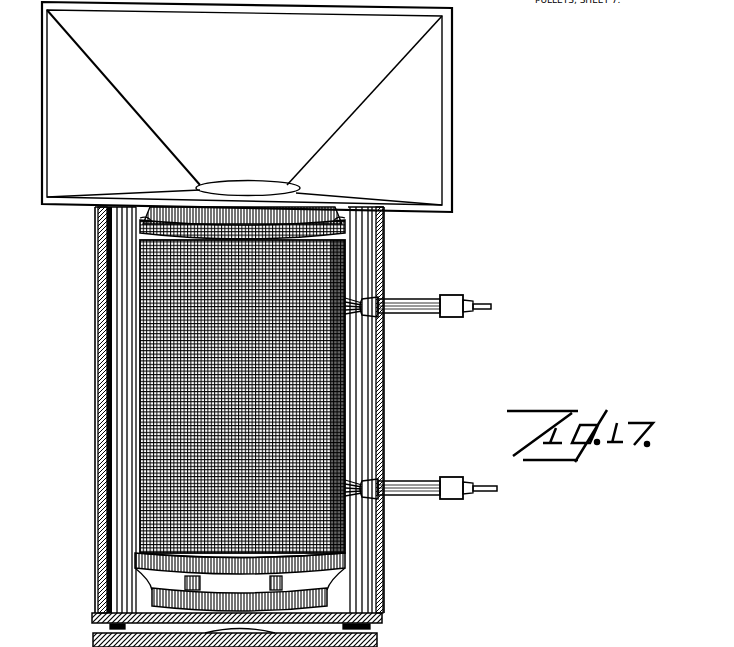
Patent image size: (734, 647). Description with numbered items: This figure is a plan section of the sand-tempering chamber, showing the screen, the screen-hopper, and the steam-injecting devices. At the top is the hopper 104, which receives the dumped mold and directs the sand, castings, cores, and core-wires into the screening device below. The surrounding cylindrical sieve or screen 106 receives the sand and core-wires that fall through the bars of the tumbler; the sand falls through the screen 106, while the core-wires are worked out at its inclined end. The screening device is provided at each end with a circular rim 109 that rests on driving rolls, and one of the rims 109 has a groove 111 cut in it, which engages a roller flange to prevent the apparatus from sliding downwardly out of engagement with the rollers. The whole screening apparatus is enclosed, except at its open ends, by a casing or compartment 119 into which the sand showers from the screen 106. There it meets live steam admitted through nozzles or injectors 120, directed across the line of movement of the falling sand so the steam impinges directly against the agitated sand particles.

The hopper 104 is at (442, 137).
The cylindrical sieve or screen 106 is at (343, 427).
The circular rim 109 is at (162, 207).
The groove 111 is at (348, 230).
The casing or compartment 119 is at (99, 382).
The steam nozzles or injectors 120 is at (380, 320).